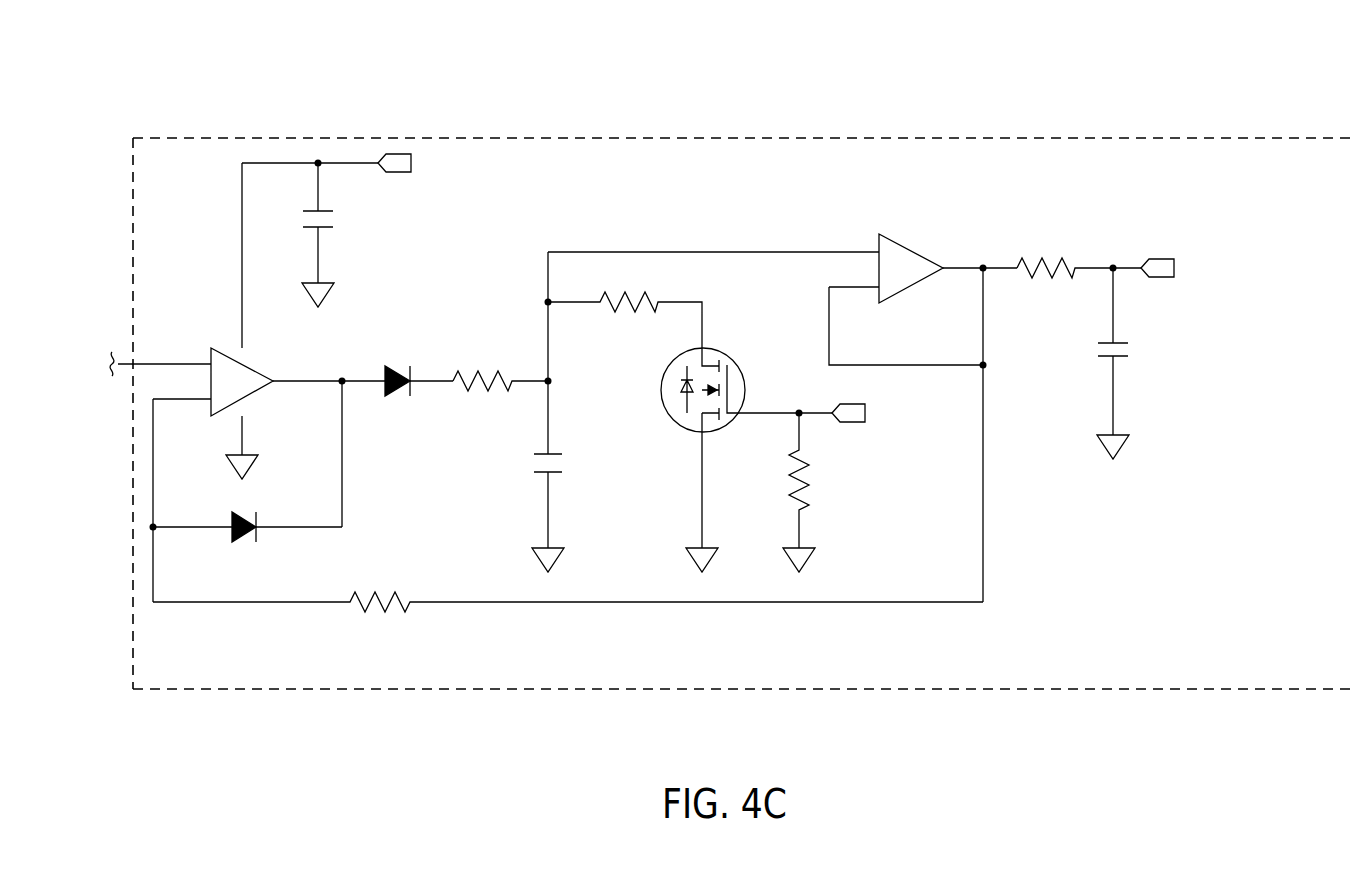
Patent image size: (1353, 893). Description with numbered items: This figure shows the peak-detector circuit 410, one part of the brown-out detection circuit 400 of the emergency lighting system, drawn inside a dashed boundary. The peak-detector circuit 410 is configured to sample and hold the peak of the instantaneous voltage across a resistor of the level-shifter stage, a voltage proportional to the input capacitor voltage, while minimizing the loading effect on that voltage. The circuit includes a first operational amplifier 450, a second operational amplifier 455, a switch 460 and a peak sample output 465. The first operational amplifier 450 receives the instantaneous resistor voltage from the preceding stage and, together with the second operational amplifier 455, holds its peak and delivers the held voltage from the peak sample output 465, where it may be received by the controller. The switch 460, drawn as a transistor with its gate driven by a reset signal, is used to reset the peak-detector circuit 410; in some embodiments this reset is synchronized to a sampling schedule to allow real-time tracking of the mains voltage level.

The brown-out detection circuit 400 is at (1068, 103).
The peak-detector circuit 410 is at (975, 690).
The first operational amplifier 450 is at (201, 318).
The second operational amplifier 455 is at (864, 217).
The switch 460 is at (682, 422).
The peak sample output 465 is at (1157, 255).